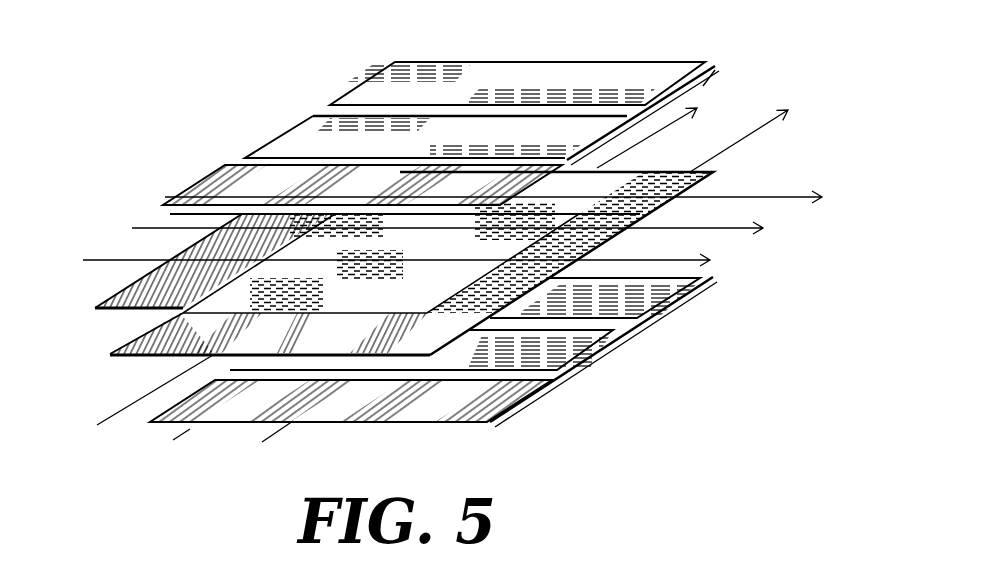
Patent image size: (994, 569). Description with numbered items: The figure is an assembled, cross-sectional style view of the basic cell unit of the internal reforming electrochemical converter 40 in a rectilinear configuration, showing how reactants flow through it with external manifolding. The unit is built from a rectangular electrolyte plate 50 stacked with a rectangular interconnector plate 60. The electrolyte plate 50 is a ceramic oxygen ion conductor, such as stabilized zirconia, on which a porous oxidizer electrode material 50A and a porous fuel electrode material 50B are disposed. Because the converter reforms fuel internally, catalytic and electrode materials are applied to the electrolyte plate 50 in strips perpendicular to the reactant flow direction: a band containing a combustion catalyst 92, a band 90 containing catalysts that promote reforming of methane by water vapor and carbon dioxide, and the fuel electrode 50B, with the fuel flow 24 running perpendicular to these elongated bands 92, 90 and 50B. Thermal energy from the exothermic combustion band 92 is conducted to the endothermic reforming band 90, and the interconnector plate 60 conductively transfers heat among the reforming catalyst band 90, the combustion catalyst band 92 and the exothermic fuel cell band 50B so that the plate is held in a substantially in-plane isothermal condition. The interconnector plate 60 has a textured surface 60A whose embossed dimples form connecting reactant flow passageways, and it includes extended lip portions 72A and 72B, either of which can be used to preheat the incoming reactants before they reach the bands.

The electrochemical converter 40 is at (296, 76).
The electrolyte plate 50 is at (717, 72).
The oxidizer electrode material 50A is at (705, 87).
The fuel electrode material 50B is at (500, 76).
The reforming catalyst band 90 is at (297, 134).
The combustion catalyst band 92 is at (213, 188).
The interconnector plate 60 is at (700, 184).
The textured surface 60A is at (204, 297).
The extended lip portion 72A is at (123, 357).
The extended lip portion 72B is at (140, 279).
The fuel flow 24 is at (187, 430).